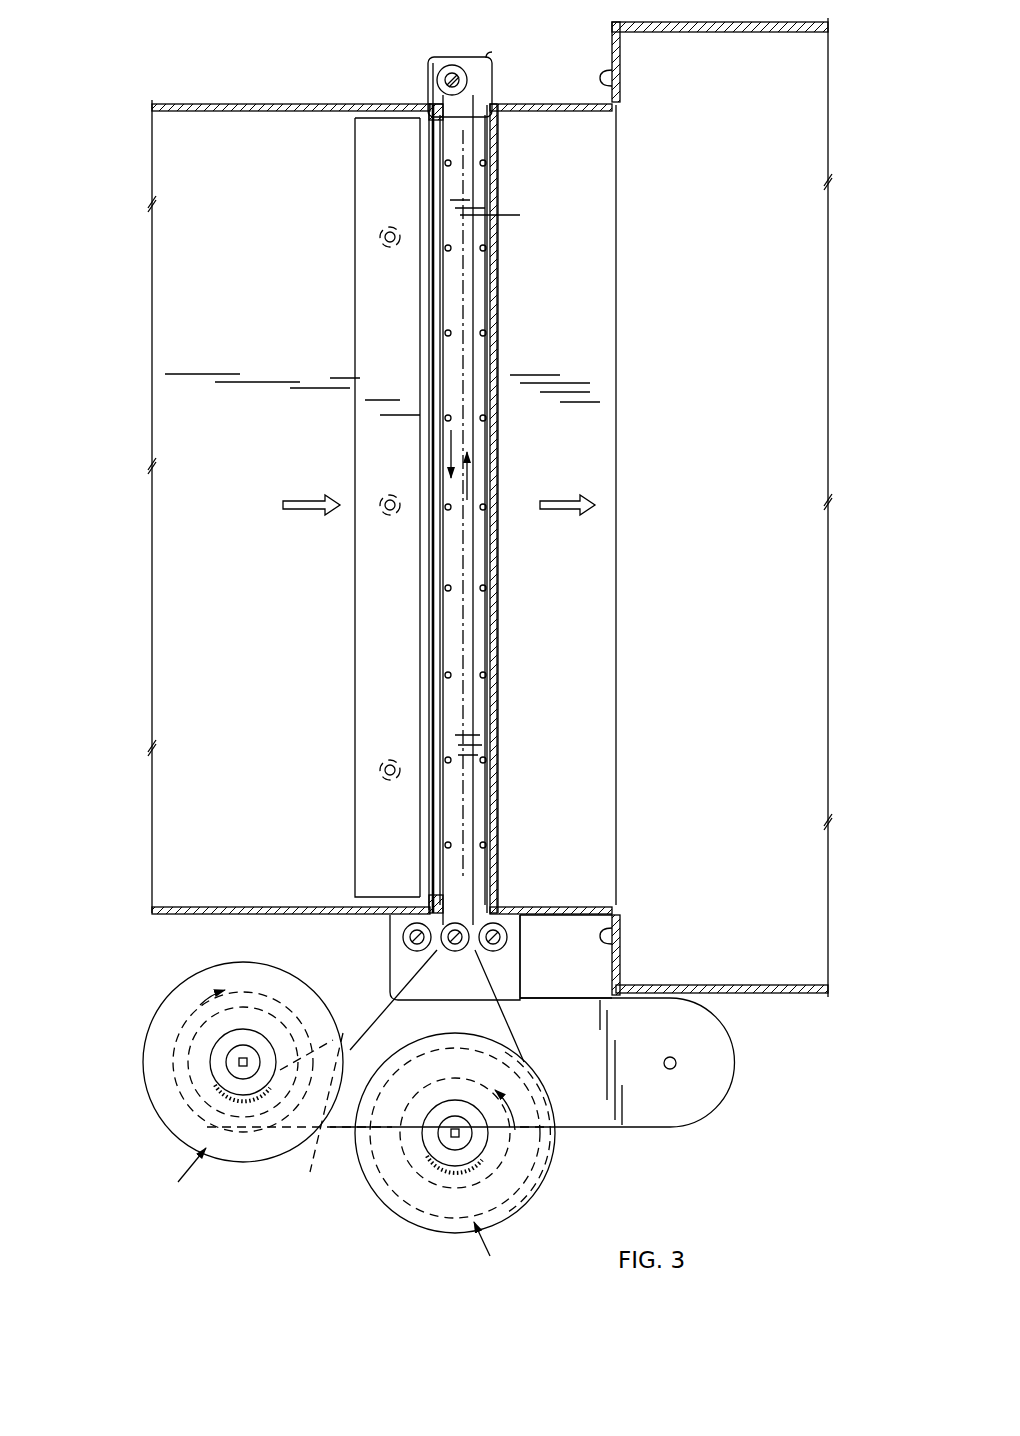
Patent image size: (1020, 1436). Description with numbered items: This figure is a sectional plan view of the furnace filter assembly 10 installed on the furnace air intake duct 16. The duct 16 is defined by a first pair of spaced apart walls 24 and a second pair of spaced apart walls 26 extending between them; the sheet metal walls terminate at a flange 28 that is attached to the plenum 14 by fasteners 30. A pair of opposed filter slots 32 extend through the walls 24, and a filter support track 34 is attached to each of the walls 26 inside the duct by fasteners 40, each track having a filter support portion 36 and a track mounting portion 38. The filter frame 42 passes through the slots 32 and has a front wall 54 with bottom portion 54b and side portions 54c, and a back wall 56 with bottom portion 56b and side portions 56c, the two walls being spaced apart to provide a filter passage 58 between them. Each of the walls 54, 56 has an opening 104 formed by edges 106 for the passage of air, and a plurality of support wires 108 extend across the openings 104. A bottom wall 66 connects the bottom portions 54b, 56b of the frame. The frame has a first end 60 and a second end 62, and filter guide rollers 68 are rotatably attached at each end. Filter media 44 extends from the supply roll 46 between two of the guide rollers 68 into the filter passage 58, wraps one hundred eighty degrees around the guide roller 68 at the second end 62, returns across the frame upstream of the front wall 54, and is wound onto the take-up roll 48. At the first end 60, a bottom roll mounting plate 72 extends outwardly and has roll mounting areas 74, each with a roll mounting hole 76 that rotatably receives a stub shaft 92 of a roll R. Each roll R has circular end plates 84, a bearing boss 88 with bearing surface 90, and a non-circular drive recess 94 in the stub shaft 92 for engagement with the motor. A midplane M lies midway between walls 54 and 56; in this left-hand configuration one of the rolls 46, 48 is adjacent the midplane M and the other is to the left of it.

The furnace filter assembly 10 is at (148, 1228).
The plenum 14 is at (812, 262).
The air intake duct 16 is at (150, 425).
The first pair of spaced apart walls 24 is at (176, 105).
The second pair of spaced apart walls 26 is at (172, 673).
The flange 28 is at (620, 64).
The fasteners 30 is at (604, 74).
The filter slots 32 is at (432, 104).
The filter support track 34 is at (352, 188).
The filter support portion 36 is at (560, 208).
The track mounting portion 38 is at (363, 146).
The fasteners 40 is at (378, 237).
The filter frame 42 is at (487, 55).
The filter media 44 is at (447, 64).
The filter media supply roll 46 is at (398, 1222).
The filter media take-up roll 48 is at (180, 1138).
The front wall 54 is at (436, 557).
The bottom portion of front wall 54b is at (436, 647).
The side portions of front wall 54c is at (430, 110).
The back wall 56 is at (500, 470).
The bottom portion of back wall 56b is at (498, 565).
The side portions of back wall 56c is at (500, 108).
The filter passage 58 is at (465, 350).
The first end 60 is at (372, 941).
The second end 62 is at (498, 58).
The bottom wall 66 is at (470, 430).
The filter guide roller 68 is at (460, 85).
The bottom roll mounting plate 72 is at (700, 1116).
The roll mounting areas 74 is at (690, 1052).
The roll mounting hole 76 is at (676, 1067).
The end plate 84 is at (248, 1150).
The bearing boss 88 is at (212, 1052).
The bearing surface 90 is at (226, 1070).
The stub shaft 92 is at (236, 1086).
The drive recess 94 is at (246, 1060).
The opening 104 is at (438, 374).
The edges 106 is at (444, 128).
The support wires 108 is at (450, 333).
The midplane M is at (463, 615).
The roll R is at (334, 1218).